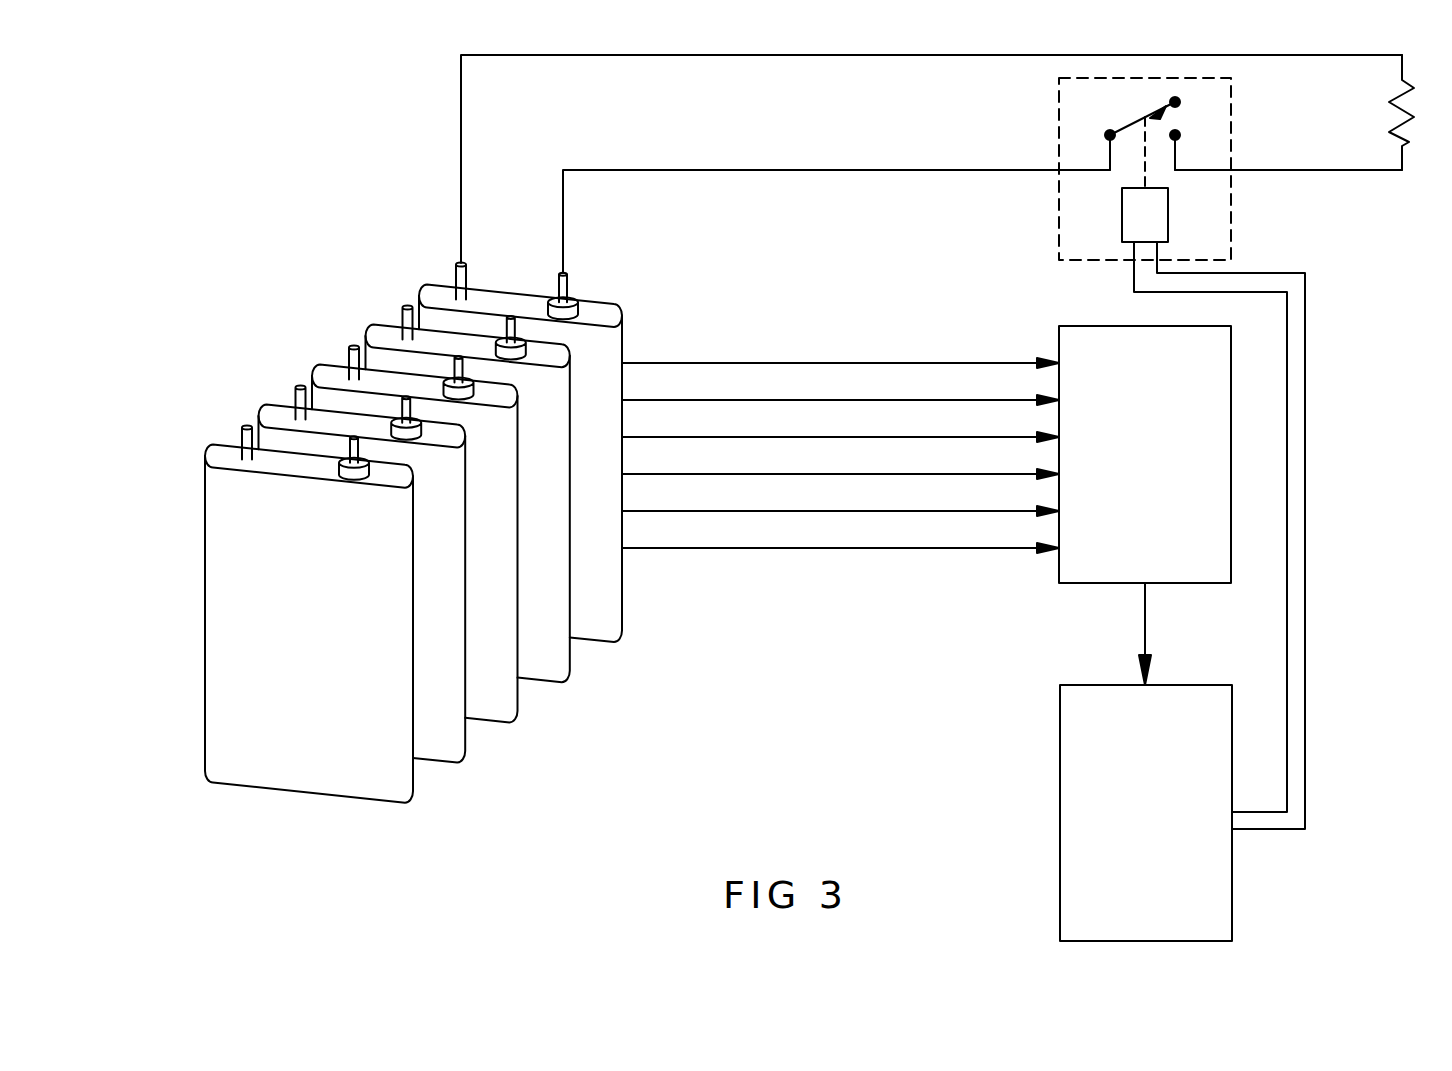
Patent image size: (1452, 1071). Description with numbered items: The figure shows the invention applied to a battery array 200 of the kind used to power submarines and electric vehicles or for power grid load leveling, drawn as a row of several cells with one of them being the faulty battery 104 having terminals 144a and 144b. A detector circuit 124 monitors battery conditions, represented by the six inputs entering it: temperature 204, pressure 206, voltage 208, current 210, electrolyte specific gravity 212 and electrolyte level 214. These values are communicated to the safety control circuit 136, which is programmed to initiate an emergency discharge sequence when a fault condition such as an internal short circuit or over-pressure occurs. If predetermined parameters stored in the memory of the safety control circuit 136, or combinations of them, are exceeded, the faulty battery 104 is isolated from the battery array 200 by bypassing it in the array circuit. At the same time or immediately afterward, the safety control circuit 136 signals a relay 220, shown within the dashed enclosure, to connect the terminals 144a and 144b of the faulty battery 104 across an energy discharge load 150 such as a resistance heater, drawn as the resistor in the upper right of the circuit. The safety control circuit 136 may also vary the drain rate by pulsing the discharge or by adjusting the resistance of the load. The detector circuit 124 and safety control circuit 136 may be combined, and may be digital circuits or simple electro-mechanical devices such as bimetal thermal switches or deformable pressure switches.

The battery array 200 is at (430, 267).
The faulty battery 104 is at (600, 296).
The terminal 144a is at (478, 258).
The terminal 144b is at (582, 274).
The temperature 204 is at (840, 354).
The pressure 206 is at (840, 391).
The voltage 208 is at (840, 428).
The current 210 is at (840, 465).
The electrolyte specific gravity 212 is at (840, 502).
The electrolyte level 214 is at (840, 539).
The detector circuit 124 is at (1232, 453).
The safety control circuit 136 is at (1060, 813).
The relay 220 is at (1232, 143).
The energy discharge load 150 is at (1420, 112).